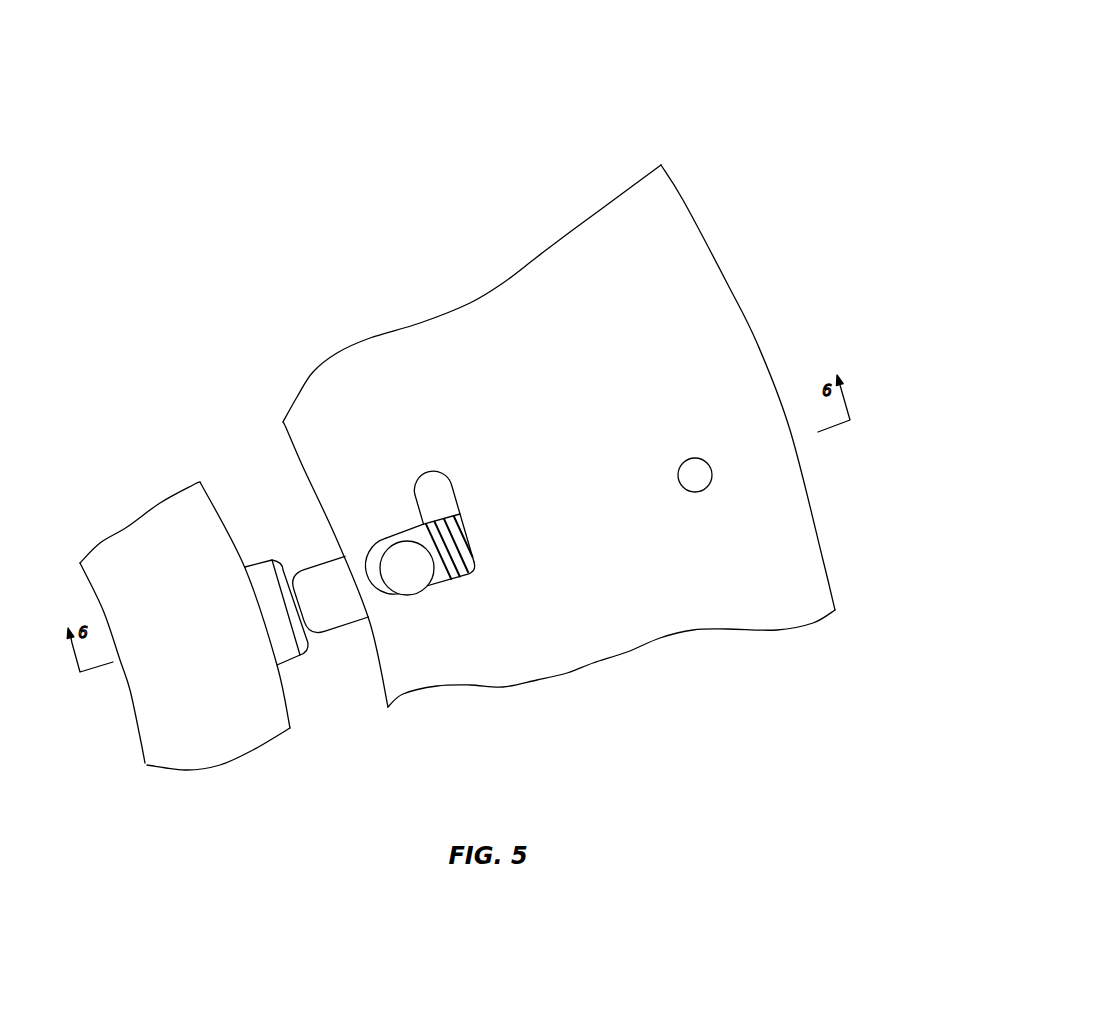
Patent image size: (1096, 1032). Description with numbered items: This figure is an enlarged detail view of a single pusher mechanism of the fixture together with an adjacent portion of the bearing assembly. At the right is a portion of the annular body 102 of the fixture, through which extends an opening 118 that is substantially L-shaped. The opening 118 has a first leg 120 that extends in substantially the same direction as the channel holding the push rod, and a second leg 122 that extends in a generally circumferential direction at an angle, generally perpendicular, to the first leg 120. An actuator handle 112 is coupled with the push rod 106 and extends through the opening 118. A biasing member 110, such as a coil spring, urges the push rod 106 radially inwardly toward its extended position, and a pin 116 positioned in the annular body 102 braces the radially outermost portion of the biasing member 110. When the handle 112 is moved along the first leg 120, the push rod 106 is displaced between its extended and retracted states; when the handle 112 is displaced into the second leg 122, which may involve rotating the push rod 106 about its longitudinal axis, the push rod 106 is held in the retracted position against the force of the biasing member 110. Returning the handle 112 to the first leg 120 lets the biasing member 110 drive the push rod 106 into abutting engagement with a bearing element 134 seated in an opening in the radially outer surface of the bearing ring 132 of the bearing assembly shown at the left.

The body 102 is at (683, 200).
The push rod 106 is at (337, 630).
The biasing member 110 is at (456, 500).
The actuator handle 112 is at (403, 597).
The pin 116 is at (695, 458).
The opening 118 is at (473, 530).
The first leg 120 is at (443, 588).
The second leg 122 is at (408, 518).
The bearing ring 132 is at (143, 748).
The bearing elements 134 is at (264, 561).